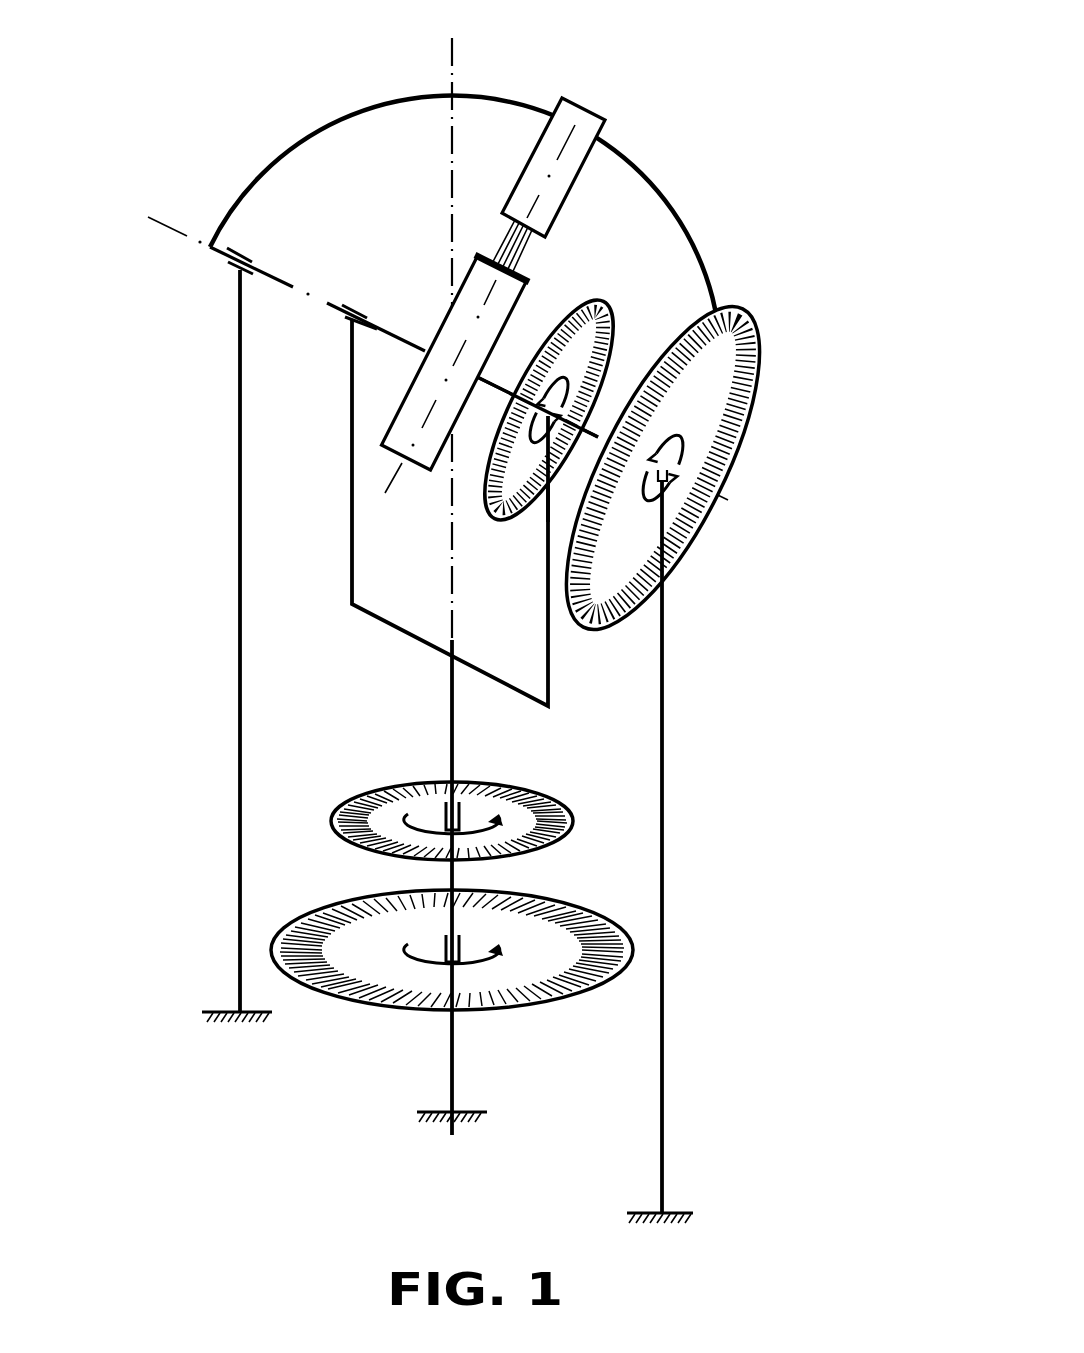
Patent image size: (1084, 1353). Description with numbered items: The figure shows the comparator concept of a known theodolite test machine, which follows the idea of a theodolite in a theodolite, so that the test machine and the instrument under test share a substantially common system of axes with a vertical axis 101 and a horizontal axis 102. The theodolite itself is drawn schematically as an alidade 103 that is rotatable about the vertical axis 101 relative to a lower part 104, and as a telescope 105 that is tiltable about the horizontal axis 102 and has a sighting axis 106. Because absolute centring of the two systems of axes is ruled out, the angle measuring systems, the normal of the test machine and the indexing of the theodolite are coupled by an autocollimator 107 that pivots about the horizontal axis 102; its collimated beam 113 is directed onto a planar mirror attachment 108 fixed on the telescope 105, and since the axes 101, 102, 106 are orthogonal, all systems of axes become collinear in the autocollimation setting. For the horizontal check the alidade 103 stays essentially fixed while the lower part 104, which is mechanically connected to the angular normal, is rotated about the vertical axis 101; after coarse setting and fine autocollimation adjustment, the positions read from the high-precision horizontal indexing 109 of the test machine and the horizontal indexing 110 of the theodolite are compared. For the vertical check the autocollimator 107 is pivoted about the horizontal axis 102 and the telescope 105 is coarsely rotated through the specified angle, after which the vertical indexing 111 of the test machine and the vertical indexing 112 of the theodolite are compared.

The vertical axis 101 is at (453, 68).
The horizontal axis 102 is at (187, 236).
The alidade 103 is at (353, 562).
The lower part 104 is at (452, 876).
The telescope 105 is at (493, 305).
The sighting axis 106 is at (681, 123).
The autocollimator 107 is at (560, 175).
The planar mirror attachment 108 is at (528, 278).
The horizontal indexing of the theodolite test machine 109 is at (620, 947).
The horizontal indexing of the theodolite 110 is at (562, 828).
The vertical indexing of the theodolite test machine 111 is at (603, 622).
The vertical indexing of the theodolite 112 is at (505, 507).
The collimated beam 113 is at (510, 240).